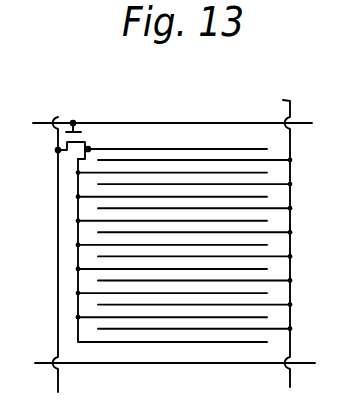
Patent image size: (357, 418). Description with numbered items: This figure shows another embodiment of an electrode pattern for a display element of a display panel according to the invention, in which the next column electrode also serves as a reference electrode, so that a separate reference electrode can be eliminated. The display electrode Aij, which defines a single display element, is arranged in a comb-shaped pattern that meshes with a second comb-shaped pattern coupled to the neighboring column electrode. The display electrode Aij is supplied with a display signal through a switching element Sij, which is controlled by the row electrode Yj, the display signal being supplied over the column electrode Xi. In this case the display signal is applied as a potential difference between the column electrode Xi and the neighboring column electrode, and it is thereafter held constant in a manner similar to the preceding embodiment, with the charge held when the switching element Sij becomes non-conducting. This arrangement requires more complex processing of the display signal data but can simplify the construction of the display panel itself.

The column electrode Xi is at (58, 117).
The row electrode Yj is at (44, 123).
The switching element Sij is at (88, 138).
The display electrode Aij is at (163, 342).